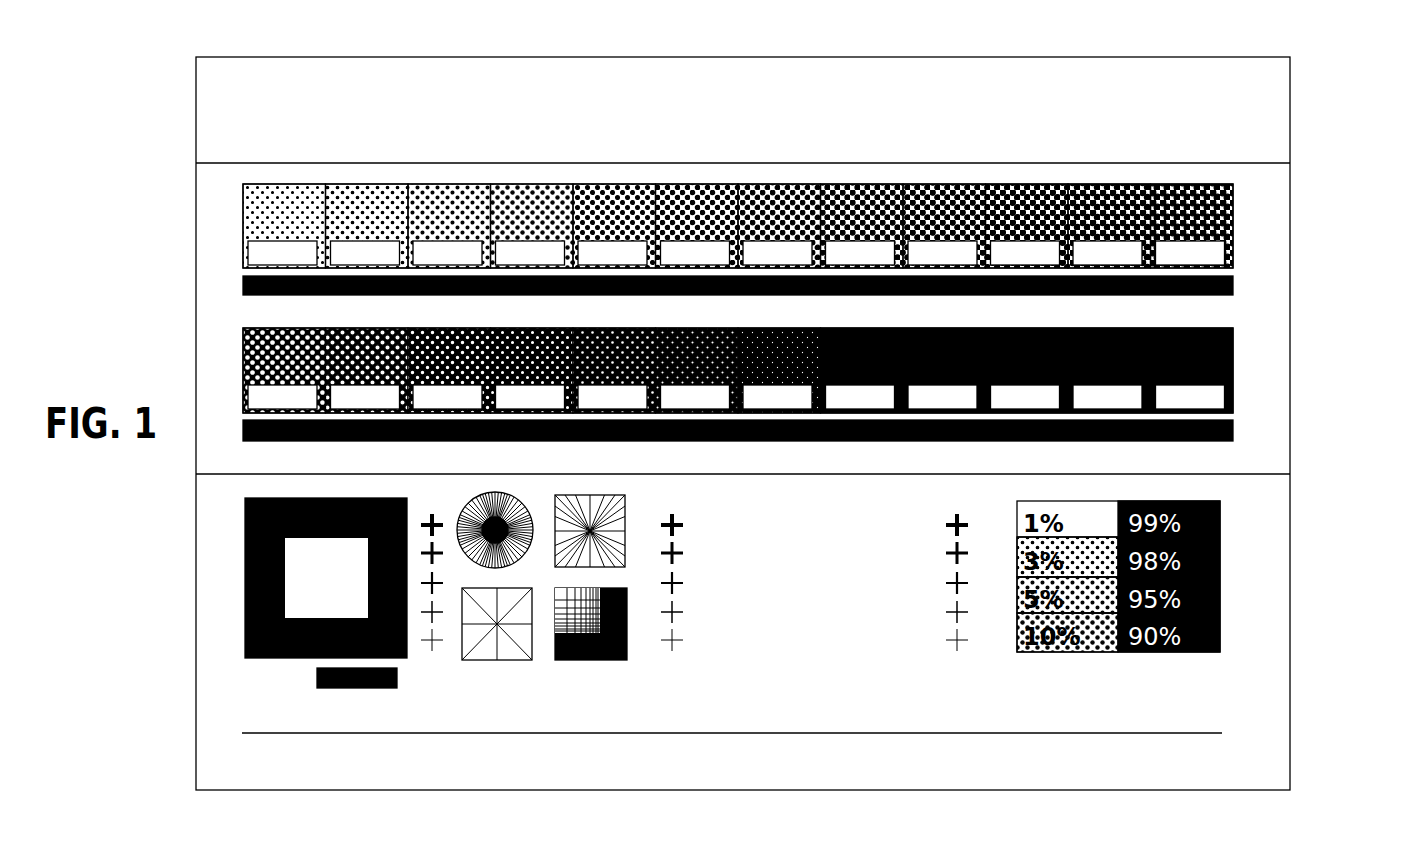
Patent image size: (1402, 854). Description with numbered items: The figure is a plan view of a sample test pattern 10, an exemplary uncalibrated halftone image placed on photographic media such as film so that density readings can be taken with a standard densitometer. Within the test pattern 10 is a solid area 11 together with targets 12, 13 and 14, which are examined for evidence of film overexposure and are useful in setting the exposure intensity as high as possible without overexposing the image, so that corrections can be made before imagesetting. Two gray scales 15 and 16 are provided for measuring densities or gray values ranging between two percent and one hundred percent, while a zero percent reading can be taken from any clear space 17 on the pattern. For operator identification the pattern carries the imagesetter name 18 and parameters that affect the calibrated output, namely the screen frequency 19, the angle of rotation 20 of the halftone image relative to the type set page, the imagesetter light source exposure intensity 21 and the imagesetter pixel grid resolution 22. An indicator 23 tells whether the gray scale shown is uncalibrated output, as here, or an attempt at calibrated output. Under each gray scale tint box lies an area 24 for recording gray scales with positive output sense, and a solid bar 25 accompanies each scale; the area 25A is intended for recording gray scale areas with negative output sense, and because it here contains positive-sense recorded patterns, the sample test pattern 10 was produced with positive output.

The test pattern 10 is at (1258, 45).
The solid area 11 is at (245, 646).
The target 12 is at (430, 677).
The target 13 is at (545, 677).
The target 14 is at (808, 677).
The gray scale 15 is at (1242, 372).
The gray scale 16 is at (1242, 222).
The clear space 17 is at (247, 98).
The imagesetter name 18 is at (613, 80).
The screen frequency 19 is at (1058, 117).
The angle of rotation 20 is at (1190, 117).
The imagesetter light source exposure intensity 21 is at (495, 117).
The imagesetter pixel grid resolution 22 is at (303, 117).
The indicator 23 is at (807, 80).
The area 24 is at (1207, 312).
The solid black bar 25 is at (1242, 283).
The area 25A is at (1242, 429).